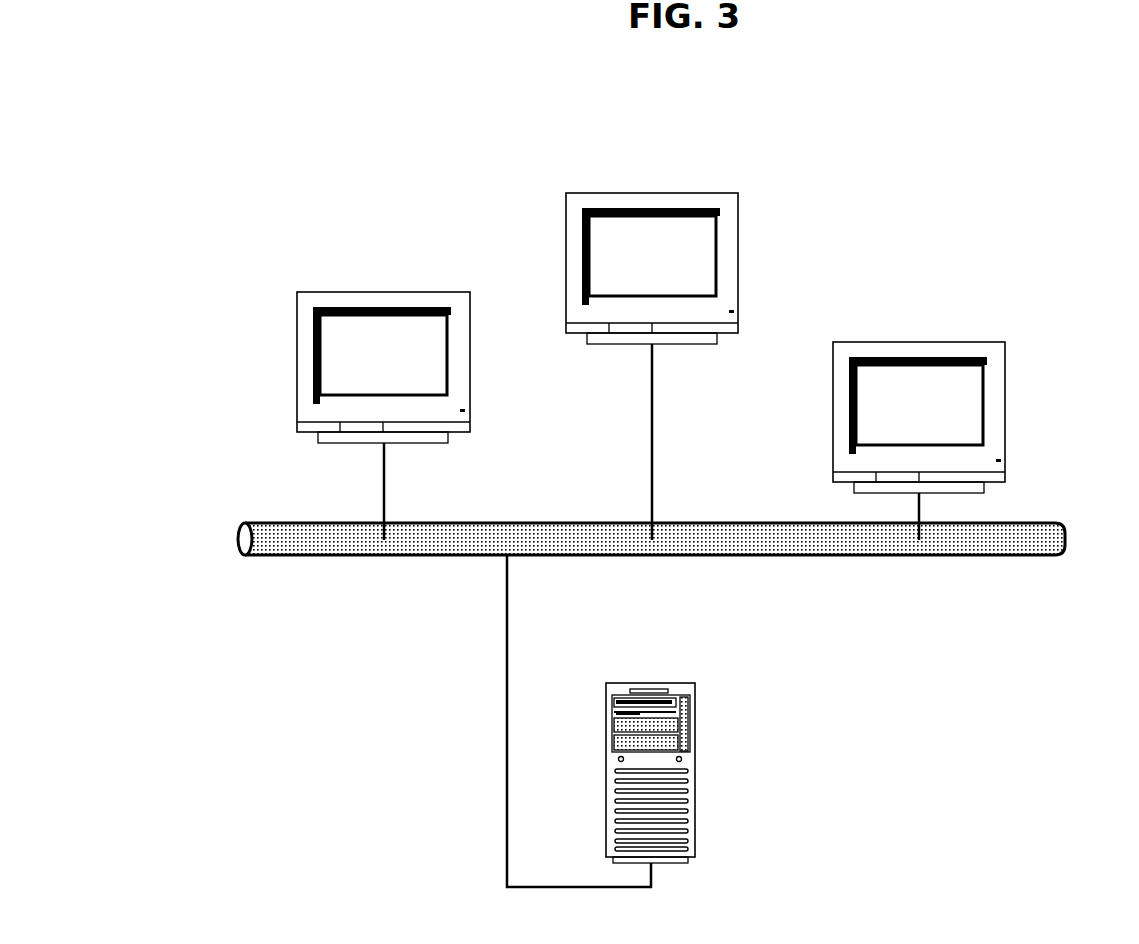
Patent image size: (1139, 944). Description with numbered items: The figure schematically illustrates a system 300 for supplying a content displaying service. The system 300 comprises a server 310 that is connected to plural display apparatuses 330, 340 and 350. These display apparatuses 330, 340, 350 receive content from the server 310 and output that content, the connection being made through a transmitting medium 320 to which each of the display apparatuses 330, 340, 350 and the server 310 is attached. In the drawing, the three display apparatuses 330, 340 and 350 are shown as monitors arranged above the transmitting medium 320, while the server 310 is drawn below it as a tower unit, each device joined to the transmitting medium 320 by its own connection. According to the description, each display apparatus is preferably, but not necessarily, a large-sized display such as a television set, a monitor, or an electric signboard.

The system 300 is at (243, 104).
The server 310 is at (695, 772).
The transmitting medium 320 is at (1065, 533).
The display apparatus 330 is at (378, 292).
The display apparatus 340 is at (648, 193).
The display apparatus 350 is at (914, 342).